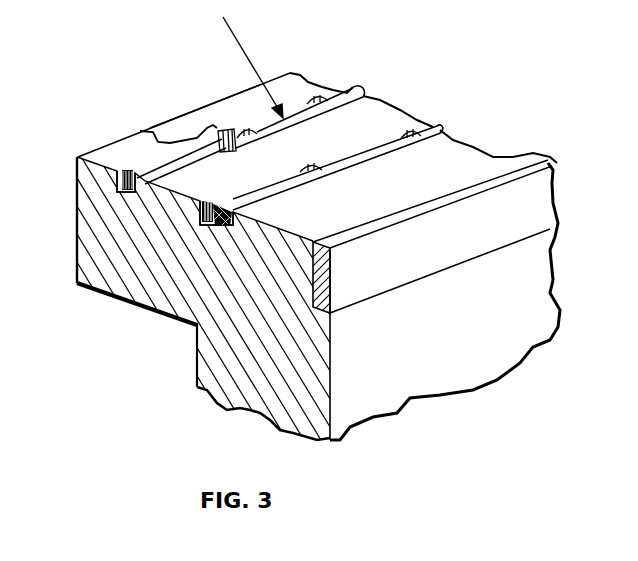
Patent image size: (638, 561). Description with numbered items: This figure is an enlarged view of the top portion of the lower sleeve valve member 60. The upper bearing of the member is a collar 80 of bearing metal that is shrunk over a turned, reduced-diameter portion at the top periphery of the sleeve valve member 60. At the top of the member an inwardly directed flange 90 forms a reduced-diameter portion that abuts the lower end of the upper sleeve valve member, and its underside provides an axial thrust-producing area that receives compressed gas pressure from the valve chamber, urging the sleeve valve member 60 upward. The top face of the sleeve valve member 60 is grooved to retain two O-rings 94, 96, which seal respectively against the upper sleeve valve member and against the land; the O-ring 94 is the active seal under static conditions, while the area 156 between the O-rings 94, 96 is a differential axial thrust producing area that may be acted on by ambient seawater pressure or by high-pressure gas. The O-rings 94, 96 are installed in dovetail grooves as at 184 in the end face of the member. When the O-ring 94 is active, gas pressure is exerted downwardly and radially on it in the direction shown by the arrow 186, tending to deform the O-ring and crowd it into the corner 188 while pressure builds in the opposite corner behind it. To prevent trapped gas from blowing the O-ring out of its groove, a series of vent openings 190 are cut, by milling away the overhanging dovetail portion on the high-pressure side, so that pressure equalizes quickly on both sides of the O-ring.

The sleeve valve member 60 is at (240, 360).
The collar 80 is at (378, 277).
The inwardly directed flange 90 is at (100, 292).
The O-ring 94 is at (352, 88).
The O-ring 96 is at (220, 228).
The differential axial thrust producing area 156 is at (266, 174).
The dovetail groove 184 is at (233, 228).
The arrow 186 is at (262, 74).
The corner 188 is at (148, 196).
The vent openings 190 is at (150, 130).